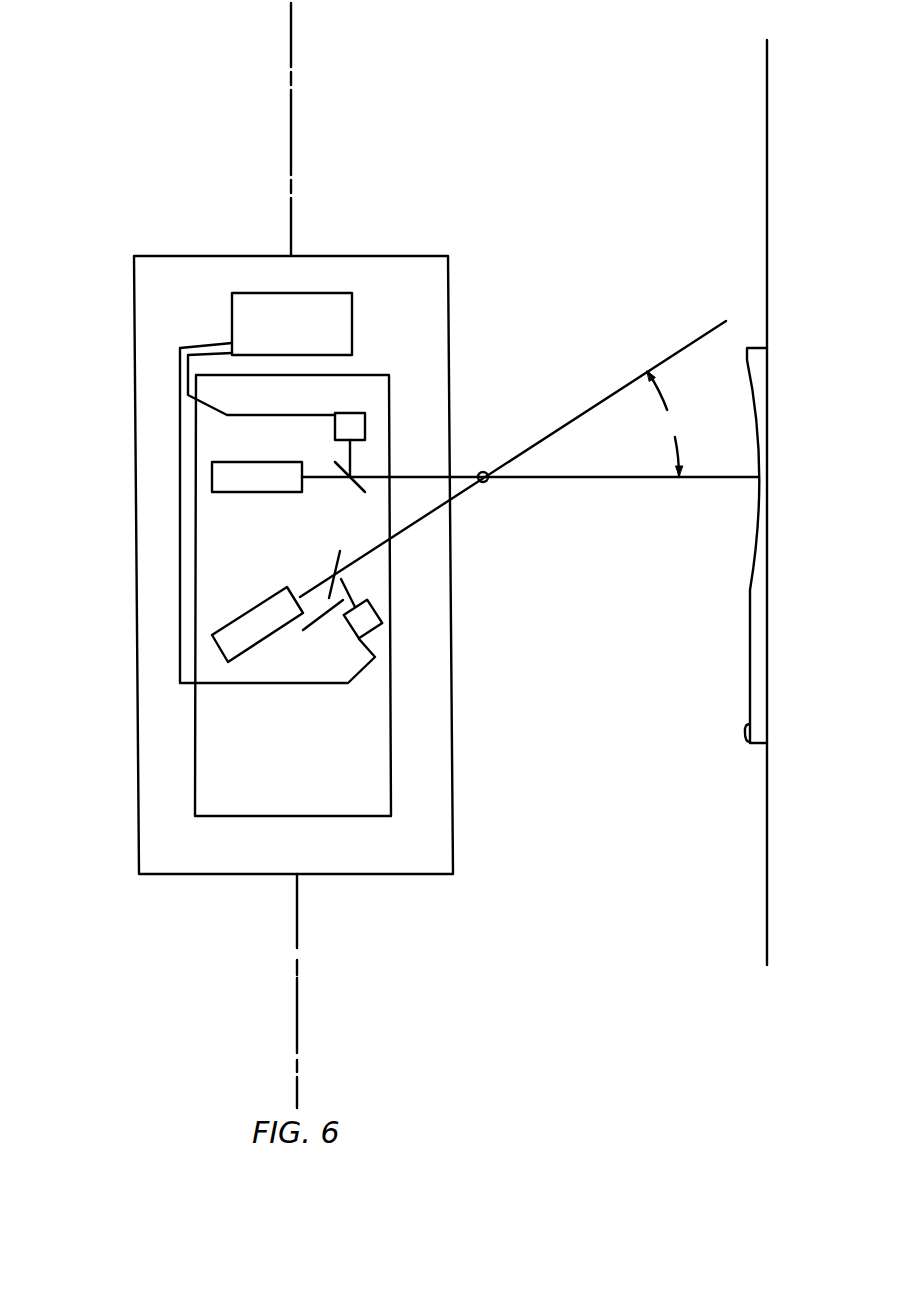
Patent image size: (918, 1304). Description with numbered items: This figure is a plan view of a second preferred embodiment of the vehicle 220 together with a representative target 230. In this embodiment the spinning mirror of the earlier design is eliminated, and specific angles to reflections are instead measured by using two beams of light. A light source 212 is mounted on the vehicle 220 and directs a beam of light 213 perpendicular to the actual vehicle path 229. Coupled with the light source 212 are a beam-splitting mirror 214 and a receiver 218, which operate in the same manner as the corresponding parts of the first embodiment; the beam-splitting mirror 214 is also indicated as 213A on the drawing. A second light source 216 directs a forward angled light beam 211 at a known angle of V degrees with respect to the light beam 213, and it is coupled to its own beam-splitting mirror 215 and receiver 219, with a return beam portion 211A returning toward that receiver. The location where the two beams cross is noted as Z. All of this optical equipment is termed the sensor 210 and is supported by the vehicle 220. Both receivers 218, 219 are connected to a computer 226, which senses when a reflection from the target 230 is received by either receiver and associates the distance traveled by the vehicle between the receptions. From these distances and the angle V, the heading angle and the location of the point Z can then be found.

The sensor 210 is at (391, 758).
The forward angled light beam 211 is at (570, 420).
The return beam 211A is at (311, 624).
The light source 212 is at (227, 493).
The beam of light 213 is at (575, 480).
The beam splitter 213A is at (347, 458).
The beam-splitting mirror 214 is at (360, 490).
The beam-splitting mirror 215 is at (333, 555).
The light source 216 is at (233, 617).
The receiver 218 is at (335, 413).
The receiver 219 is at (387, 603).
The vehicle 220 is at (450, 333).
The computer 226 is at (353, 328).
The actual vehicle path 229 is at (298, 940).
The target 230 is at (758, 748).
The beam crossing location Z is at (487, 471).
The angle V is at (665, 424).